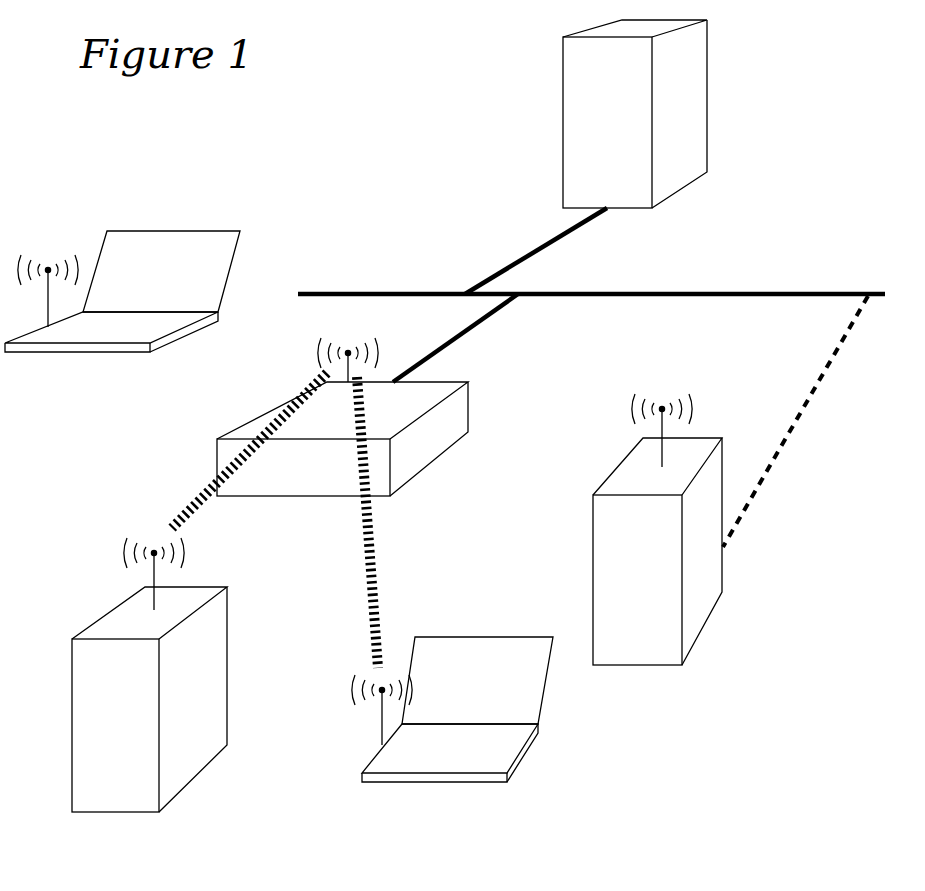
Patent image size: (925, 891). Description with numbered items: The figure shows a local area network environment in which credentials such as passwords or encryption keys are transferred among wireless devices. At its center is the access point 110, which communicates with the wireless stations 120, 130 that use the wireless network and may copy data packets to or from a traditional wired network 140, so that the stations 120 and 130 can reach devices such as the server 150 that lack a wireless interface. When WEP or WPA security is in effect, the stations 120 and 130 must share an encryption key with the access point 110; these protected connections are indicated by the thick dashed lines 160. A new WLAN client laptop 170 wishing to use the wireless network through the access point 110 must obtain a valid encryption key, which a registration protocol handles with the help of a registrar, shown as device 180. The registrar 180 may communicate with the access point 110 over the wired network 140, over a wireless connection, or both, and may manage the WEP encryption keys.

The access point 110 is at (367, 395).
The station 120 is at (149, 679).
The station 130 is at (452, 723).
The wired network 140 is at (591, 282).
The server 150 is at (597, 157).
The thick dashed lines 160 is at (360, 588).
The WLAN client laptop 170 is at (122, 304).
The registrar 180 is at (730, 482).